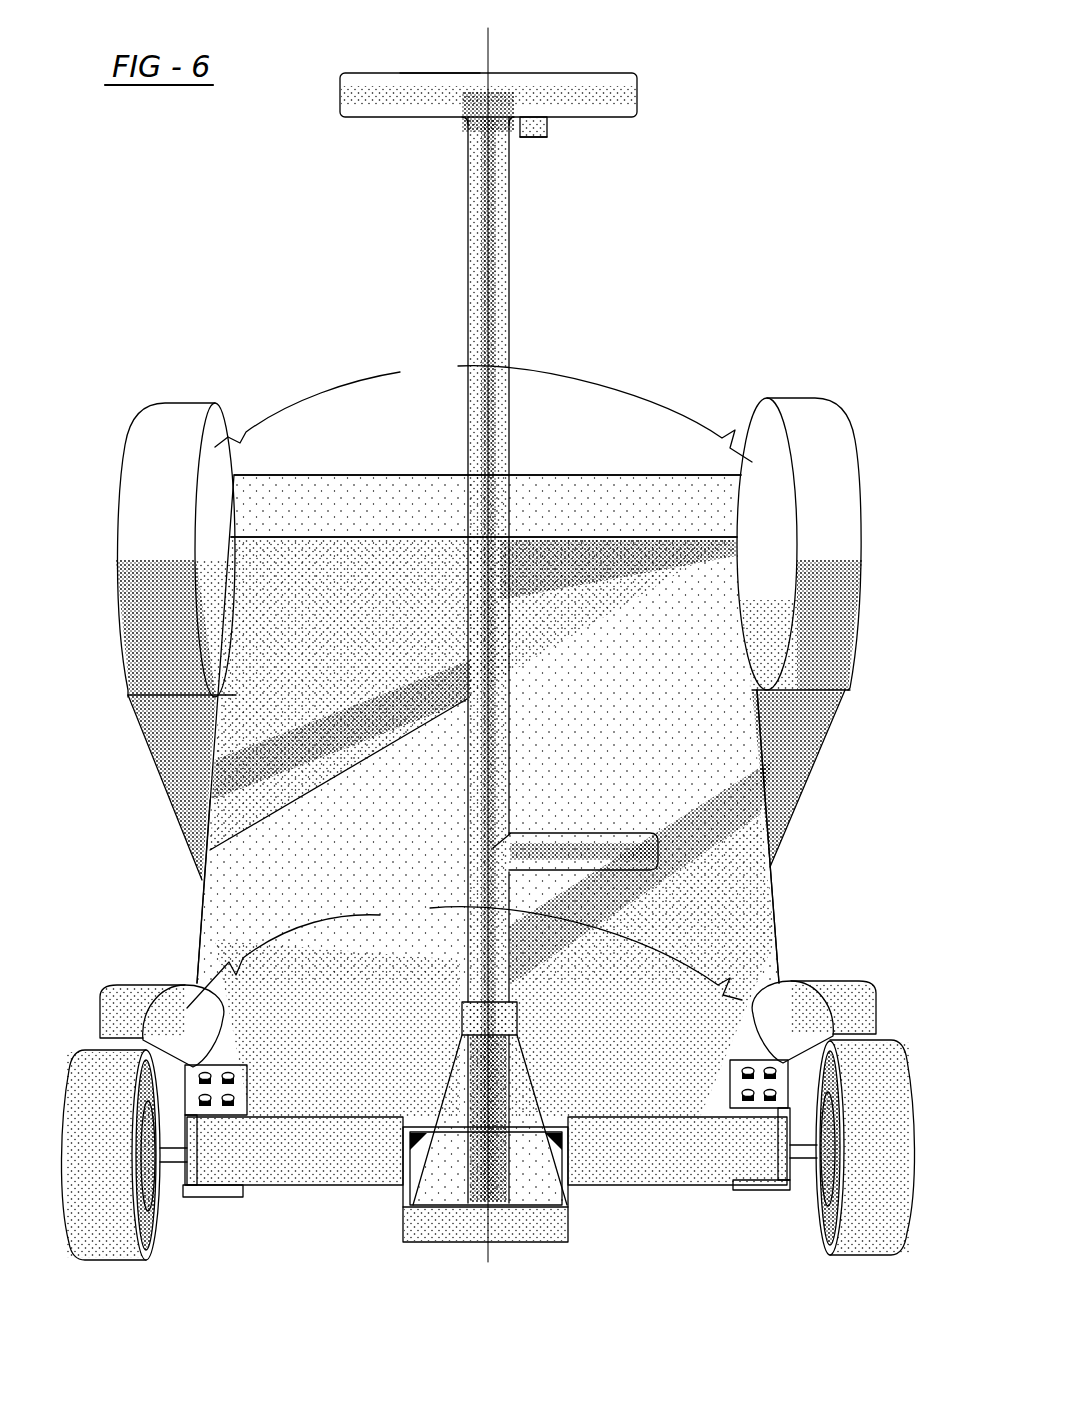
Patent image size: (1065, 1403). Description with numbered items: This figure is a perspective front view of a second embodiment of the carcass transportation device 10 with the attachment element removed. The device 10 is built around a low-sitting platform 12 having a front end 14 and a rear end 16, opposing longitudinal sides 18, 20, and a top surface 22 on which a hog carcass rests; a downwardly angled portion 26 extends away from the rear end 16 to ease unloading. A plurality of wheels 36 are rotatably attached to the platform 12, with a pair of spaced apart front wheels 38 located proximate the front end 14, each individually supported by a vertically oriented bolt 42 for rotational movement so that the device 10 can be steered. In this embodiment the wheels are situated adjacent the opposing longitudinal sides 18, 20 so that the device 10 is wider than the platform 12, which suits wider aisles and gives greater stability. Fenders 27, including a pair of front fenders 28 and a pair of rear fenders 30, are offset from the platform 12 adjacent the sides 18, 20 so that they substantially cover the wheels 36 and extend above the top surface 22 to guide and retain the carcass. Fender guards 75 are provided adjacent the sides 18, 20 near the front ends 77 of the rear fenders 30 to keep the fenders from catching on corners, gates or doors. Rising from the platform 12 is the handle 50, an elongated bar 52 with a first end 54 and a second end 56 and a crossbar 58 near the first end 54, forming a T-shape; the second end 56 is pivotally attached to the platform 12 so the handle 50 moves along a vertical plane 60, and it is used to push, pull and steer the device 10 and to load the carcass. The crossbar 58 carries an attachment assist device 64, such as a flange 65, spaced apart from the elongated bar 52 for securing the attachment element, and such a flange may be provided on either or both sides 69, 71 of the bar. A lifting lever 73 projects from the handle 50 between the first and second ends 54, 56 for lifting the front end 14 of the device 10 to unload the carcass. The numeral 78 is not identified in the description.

The carcass transportation device 10 is at (762, 168).
The platform 12 is at (725, 600).
The front end 14 is at (343, 1200).
The rear end 16 is at (304, 520).
The longitudinal side 18 is at (182, 912).
The longitudinal side 20 is at (790, 887).
The top surface 22 is at (395, 821).
The downwardly angled portion 26 is at (391, 490).
The fenders 27 is at (164, 417).
The front fenders 28 is at (464, 957).
The rear fenders 30 is at (483, 410).
The wheels 36 is at (83, 1075).
The front wheels 38 is at (107, 1218).
The vertically oriented bolt 42 is at (210, 1097).
The handle 50 is at (452, 621).
The elongated bar 52 is at (502, 702).
The first end 54 is at (455, 138).
The second end 56 is at (556, 1097).
The crossbar 58 is at (637, 86).
The vertical plane 60 is at (489, 56).
The attachment assist device 64 is at (566, 125).
The flange 65 is at (547, 135).
The side 69 is at (467, 217).
The side 71 is at (509, 207).
The lifting lever 73 is at (590, 836).
The fender guards 75 is at (187, 783).
The front ends 77 is at (160, 696).
The grip 78 is at (440, 73).